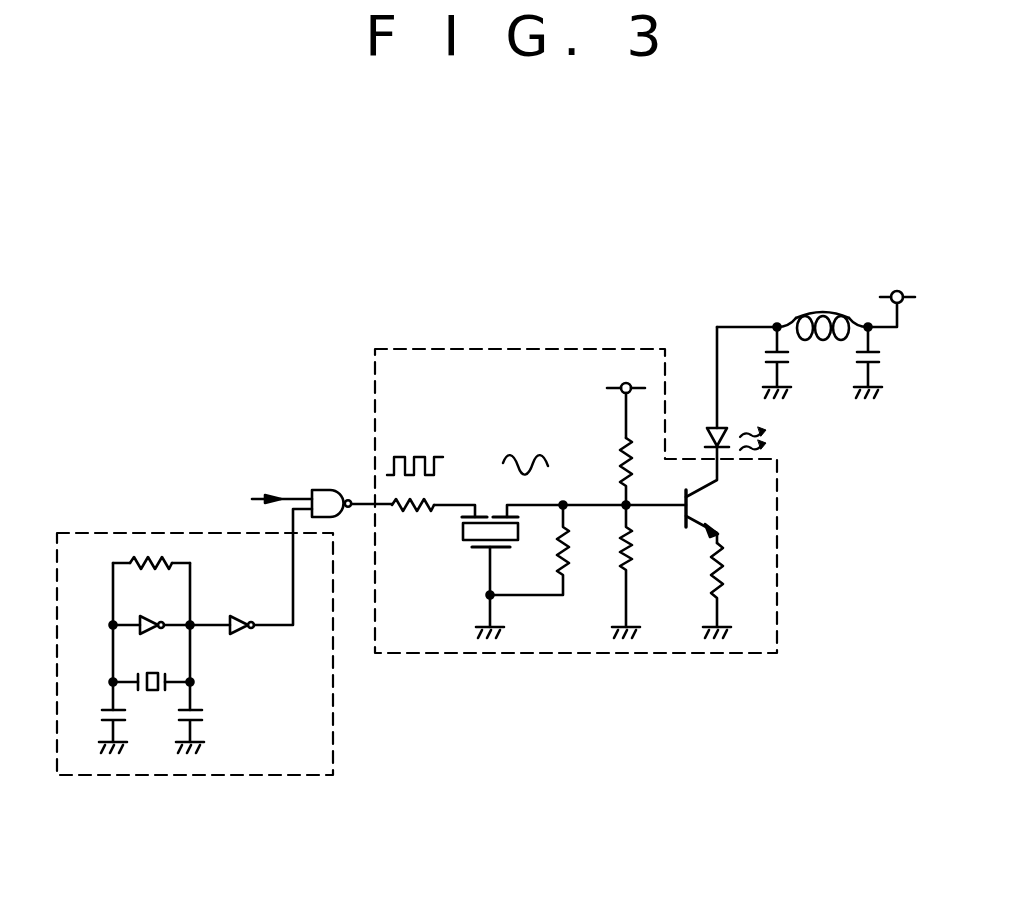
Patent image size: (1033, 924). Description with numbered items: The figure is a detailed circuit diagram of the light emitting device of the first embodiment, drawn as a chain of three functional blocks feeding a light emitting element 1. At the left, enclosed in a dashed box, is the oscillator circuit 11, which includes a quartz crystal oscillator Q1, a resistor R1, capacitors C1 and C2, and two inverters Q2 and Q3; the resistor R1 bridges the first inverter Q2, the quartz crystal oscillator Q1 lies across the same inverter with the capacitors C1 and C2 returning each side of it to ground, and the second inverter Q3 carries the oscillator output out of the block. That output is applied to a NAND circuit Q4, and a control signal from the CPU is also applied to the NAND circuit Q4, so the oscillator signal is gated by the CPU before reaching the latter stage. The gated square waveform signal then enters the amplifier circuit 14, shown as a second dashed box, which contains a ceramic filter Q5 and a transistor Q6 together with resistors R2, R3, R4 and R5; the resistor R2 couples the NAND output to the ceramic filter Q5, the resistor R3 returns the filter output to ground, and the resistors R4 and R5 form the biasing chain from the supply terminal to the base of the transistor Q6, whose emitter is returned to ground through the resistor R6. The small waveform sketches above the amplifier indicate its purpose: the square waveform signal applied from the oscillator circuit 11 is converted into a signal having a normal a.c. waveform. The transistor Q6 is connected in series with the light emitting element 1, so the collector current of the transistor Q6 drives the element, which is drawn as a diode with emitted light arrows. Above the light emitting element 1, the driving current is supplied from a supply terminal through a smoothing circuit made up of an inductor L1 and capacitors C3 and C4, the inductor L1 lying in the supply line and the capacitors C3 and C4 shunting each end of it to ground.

The light emitting element 1 is at (704, 436).
The oscillator circuit 11 is at (98, 532).
The amplifier circuit 14 is at (458, 348).
The element CPU is at (237, 498).
The resistor R1 is at (148, 573).
The resistor R2 is at (398, 512).
The resistor R3 is at (559, 561).
The resistor R4 is at (636, 456).
The resistor R5 is at (636, 554).
The resistor R6 is at (722, 584).
The capacitor C1 is at (103, 716).
The capacitor C2 is at (197, 718).
The capacitor C3 is at (767, 358).
The capacitor C4 is at (877, 358).
The quartz crystal oscillator Q1 is at (151, 692).
The inverter Q2 is at (145, 632).
The inverter Q3 is at (240, 632).
The NAND circuit Q4 is at (328, 489).
The ceramic filter Q5 is at (462, 545).
The transistor Q6 is at (702, 508).
The inductor L1 is at (809, 314).